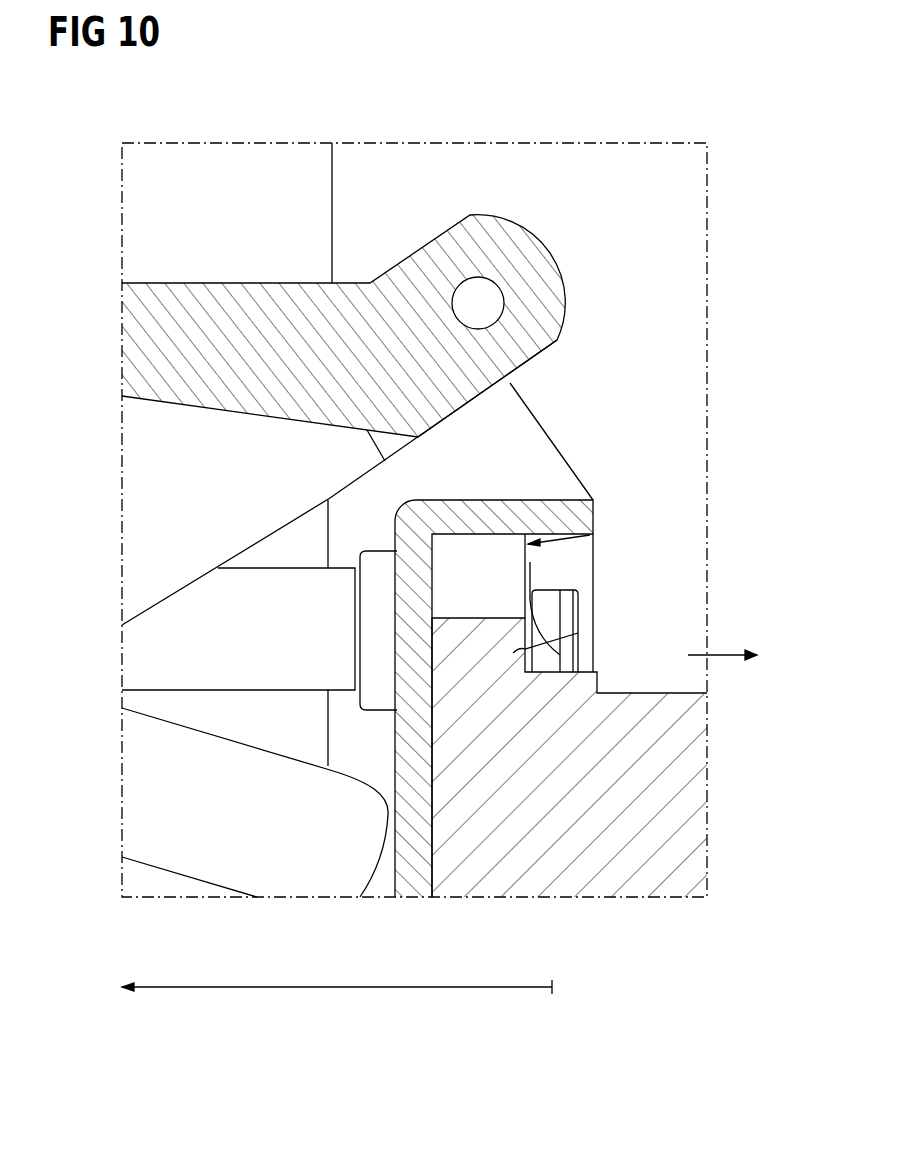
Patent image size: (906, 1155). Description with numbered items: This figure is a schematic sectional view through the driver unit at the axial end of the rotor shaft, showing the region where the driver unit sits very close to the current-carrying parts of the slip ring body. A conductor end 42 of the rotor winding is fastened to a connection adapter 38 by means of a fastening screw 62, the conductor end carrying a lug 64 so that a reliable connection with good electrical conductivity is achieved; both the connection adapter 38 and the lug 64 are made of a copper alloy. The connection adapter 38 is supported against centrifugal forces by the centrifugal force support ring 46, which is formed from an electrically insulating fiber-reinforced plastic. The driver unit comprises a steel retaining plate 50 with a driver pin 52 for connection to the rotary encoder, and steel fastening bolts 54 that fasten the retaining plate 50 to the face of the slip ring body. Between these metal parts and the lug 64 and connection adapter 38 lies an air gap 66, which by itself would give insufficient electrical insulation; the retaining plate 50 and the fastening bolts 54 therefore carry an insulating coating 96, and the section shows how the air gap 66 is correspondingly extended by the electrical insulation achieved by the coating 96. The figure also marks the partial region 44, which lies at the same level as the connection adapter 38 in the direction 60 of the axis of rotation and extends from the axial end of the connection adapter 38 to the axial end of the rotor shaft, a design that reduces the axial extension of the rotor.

The connection adapter 38 is at (143, 343).
The conductor end 42 is at (325, 477).
The partial region 44 is at (340, 990).
The centrifugal force support ring 46 is at (143, 225).
The retaining plate 50 is at (583, 635).
The driver pin 52 is at (690, 812).
The fastening bolt 54 is at (588, 617).
The direction of the axis of rotation 60 is at (722, 655).
The fastening screw 62 is at (487, 299).
The lug 64 is at (387, 440).
The air gap 66 is at (533, 413).
The insulating coating 96 is at (515, 498).